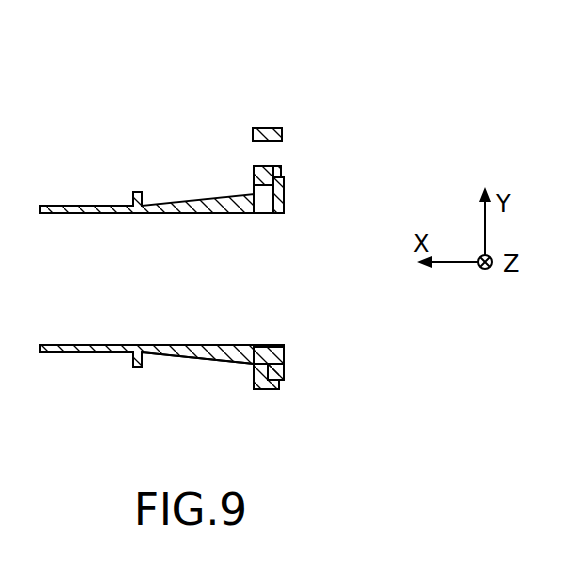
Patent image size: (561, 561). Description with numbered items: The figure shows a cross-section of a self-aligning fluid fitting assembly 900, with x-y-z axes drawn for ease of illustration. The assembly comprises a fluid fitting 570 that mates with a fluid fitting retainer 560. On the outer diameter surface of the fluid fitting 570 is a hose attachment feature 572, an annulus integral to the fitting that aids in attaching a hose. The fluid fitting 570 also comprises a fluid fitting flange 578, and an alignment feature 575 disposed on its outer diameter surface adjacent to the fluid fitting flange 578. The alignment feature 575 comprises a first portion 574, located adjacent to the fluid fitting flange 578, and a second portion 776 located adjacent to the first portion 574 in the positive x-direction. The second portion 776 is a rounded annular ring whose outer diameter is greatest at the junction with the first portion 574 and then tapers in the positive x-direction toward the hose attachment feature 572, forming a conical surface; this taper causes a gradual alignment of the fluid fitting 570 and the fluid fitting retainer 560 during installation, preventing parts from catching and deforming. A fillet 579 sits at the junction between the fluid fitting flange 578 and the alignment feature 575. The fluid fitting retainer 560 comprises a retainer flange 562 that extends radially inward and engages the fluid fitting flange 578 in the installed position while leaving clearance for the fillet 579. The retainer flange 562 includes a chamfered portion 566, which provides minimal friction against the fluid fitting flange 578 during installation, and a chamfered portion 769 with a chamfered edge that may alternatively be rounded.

The imaging assembly 900 is at (38, 82).
The fluid fitting 570 is at (52, 206).
The hose attachment feature 572 is at (137, 192).
The retainer flange 562 is at (256, 173).
The fillet 579 is at (262, 189).
The fluid fitting retainer 560 is at (282, 134).
The alignment feature 575 is at (226, 363).
The second portion 776 is at (188, 364).
The first portion 574 is at (260, 344).
The fluid fitting flange 578 is at (284, 351).
The chamfered portion 769 is at (284, 369).
The chamfered portion 566 is at (279, 384).